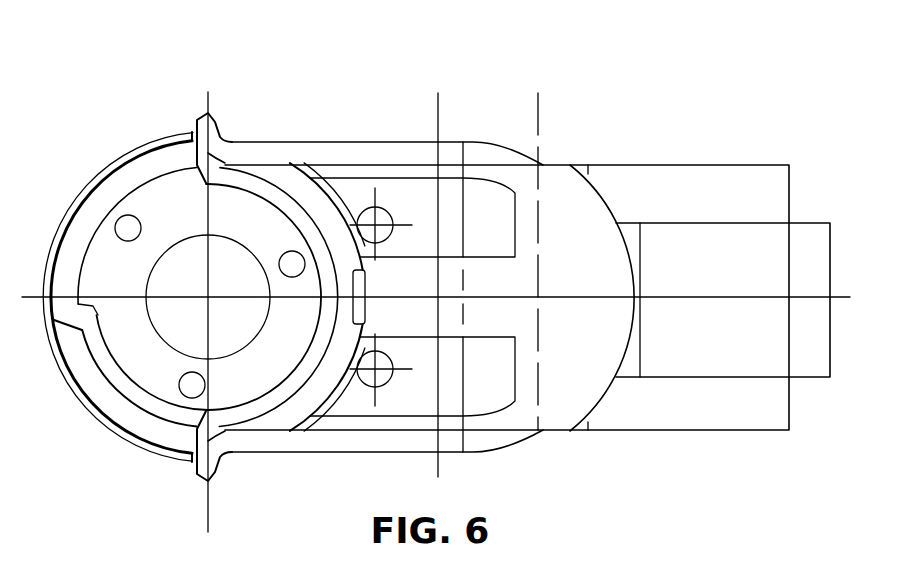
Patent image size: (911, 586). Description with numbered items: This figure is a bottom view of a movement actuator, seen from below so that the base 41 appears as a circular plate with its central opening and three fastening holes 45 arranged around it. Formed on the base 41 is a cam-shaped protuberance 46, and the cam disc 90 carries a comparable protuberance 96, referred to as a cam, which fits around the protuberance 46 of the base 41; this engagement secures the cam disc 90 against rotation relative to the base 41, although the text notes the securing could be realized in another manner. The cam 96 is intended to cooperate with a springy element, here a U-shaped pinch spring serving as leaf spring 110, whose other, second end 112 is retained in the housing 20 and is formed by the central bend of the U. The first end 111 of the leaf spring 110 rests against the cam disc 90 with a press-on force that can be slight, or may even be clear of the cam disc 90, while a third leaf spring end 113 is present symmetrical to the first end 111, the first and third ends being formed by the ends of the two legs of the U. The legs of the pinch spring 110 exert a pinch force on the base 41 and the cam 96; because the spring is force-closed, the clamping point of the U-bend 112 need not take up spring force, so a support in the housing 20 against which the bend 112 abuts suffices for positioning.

The housing 20 is at (170, 458).
The base 41 is at (115, 368).
The fastening holes 45 is at (124, 215).
The cam-shaped protuberance 46 is at (155, 172).
The cam disc 90 is at (140, 407).
The protuberance 96 is at (62, 339).
The leaf spring 110 is at (380, 141).
The first end 111 is at (245, 120).
The second end 112 is at (590, 138).
The third leaf spring end 113 is at (250, 460).